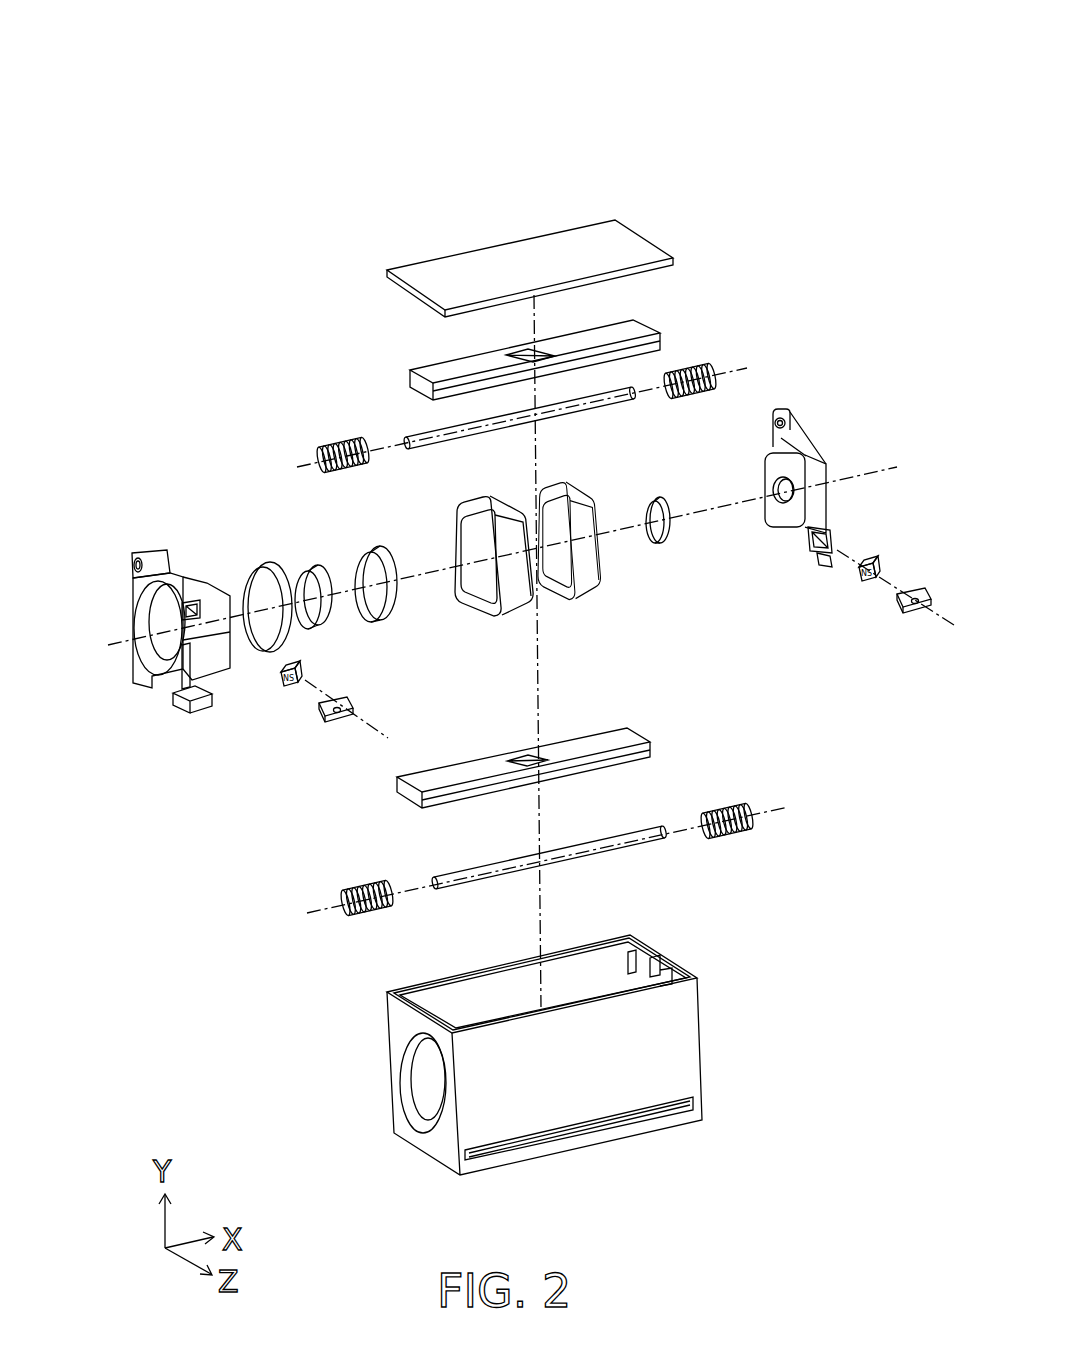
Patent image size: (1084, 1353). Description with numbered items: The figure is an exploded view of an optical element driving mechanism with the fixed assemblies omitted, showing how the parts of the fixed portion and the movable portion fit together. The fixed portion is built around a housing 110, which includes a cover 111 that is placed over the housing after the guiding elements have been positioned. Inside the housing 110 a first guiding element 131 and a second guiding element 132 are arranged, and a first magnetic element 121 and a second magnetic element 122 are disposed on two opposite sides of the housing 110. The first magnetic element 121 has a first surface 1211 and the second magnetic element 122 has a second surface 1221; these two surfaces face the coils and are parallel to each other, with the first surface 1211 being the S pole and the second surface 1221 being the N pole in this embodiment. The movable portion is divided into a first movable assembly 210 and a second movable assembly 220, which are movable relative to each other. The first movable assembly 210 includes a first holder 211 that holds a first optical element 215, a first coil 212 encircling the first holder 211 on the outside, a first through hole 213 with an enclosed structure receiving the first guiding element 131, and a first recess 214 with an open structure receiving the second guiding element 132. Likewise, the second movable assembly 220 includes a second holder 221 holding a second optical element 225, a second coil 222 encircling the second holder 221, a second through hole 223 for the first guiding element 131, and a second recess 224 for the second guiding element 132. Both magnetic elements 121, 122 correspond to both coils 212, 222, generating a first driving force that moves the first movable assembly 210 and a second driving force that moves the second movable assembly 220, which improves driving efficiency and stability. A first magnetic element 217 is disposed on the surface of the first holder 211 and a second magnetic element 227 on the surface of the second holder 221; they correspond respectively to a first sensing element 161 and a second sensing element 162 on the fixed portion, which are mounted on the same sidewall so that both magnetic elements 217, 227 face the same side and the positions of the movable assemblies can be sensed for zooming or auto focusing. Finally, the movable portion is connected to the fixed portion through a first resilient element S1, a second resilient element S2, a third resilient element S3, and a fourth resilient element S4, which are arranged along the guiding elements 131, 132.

The housing 110 is at (680, 1047).
The cover 111 is at (627, 238).
The first magnetic element 121 is at (653, 318).
The first surface 1211 is at (653, 358).
The second magnetic element 122 is at (408, 802).
The second surface 1221 is at (418, 778).
The first guiding element 131 is at (430, 437).
The second guiding element 132 is at (647, 842).
The first sensing element 161 is at (340, 702).
The second sensing element 162 is at (913, 593).
The first movable assembly 210 is at (140, 2).
The first holder 211 is at (140, 670).
The first coil 212 is at (455, 512).
The first through hole 213 is at (130, 567).
The first recess 214 is at (173, 698).
The first optical element 215 is at (370, 558).
The first magnetic element 217 is at (280, 680).
The second movable assembly 220 is at (585, 326).
The second holder 221 is at (823, 458).
The second coil 222 is at (592, 560).
The second through hole 223 is at (775, 423).
The second recess 224 is at (812, 567).
The second optical element 225 is at (673, 530).
The second magnetic element 227 is at (868, 560).
The first resilient element S1 is at (340, 450).
The second resilient element S2 is at (712, 370).
The third resilient element S3 is at (348, 917).
The fourth resilient element S4 is at (742, 807).